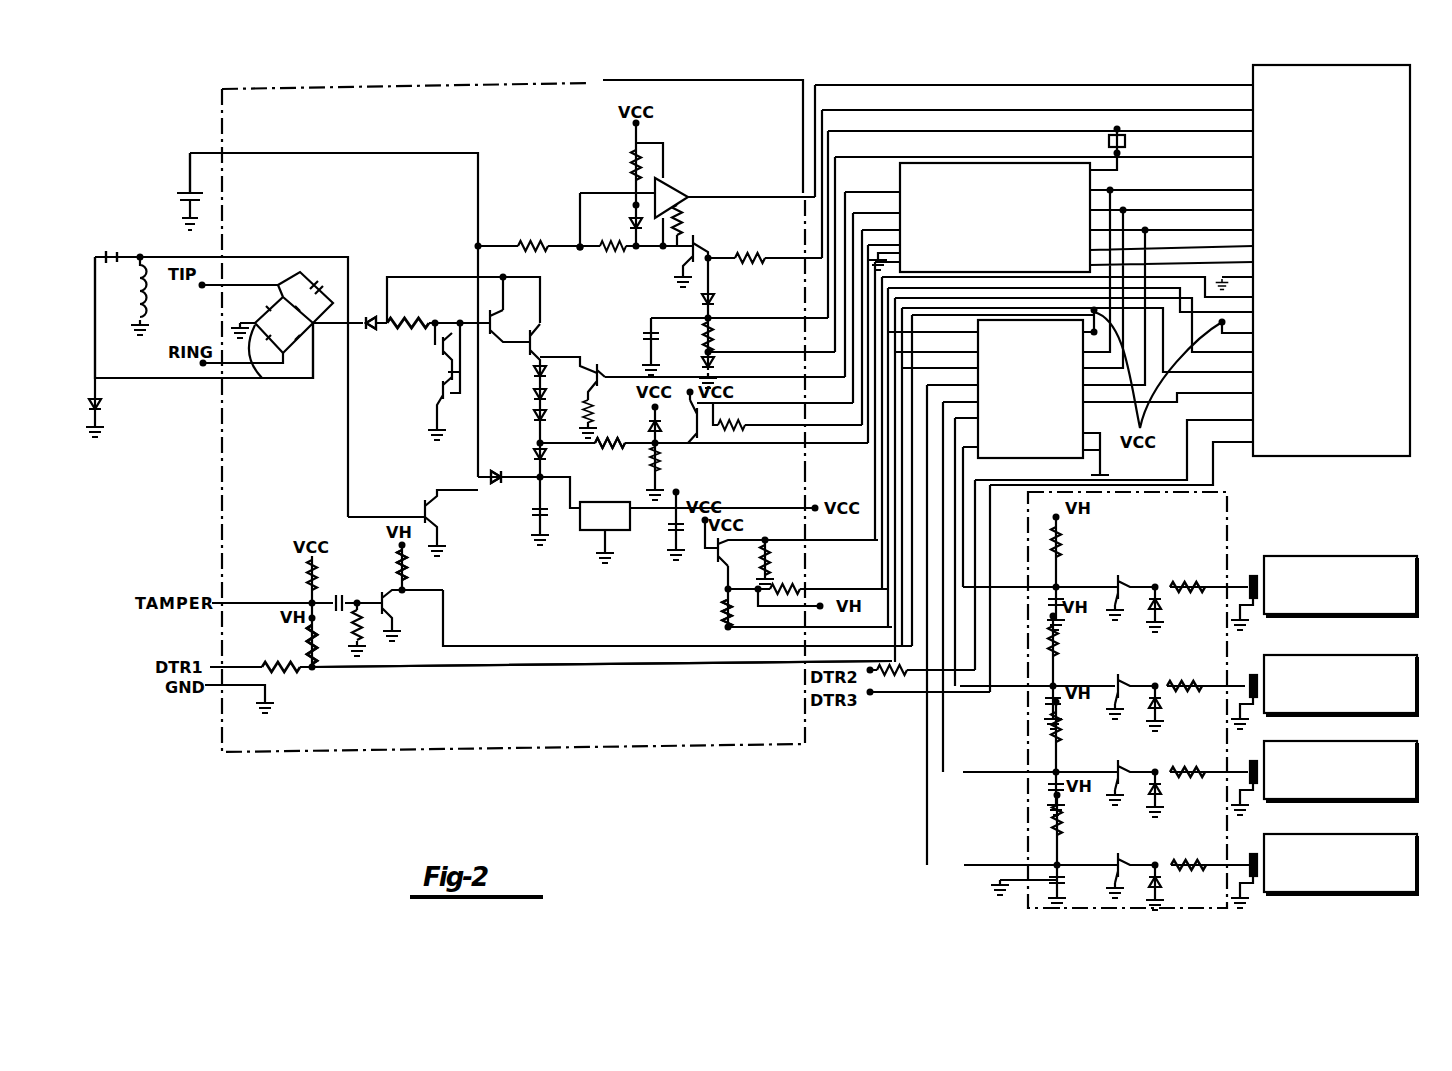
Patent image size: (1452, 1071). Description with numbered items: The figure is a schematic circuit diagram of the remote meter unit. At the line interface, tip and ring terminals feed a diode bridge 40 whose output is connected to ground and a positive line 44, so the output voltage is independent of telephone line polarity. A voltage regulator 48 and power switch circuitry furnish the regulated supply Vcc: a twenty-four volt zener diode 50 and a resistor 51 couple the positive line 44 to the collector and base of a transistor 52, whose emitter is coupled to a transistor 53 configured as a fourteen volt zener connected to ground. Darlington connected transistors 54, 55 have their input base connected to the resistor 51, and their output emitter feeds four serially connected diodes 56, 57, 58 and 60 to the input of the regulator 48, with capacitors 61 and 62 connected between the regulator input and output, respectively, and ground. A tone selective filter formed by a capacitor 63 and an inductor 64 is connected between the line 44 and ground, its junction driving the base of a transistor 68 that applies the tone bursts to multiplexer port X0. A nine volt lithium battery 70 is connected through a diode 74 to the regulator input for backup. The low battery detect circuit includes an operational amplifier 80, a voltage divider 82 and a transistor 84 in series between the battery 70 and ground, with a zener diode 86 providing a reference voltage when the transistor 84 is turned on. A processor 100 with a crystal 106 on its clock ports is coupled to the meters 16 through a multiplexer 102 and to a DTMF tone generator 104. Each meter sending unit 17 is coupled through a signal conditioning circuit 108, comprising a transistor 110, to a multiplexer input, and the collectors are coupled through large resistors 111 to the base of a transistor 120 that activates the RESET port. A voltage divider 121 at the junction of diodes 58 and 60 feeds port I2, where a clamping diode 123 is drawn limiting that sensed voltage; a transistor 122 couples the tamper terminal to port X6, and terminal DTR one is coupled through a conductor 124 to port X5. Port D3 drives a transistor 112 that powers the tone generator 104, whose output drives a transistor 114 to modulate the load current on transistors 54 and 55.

The meter 16 is at (1396, 553).
The meter sending unit 17 is at (1253, 562).
The diode bridge 40 is at (281, 341).
The positive line 44 is at (345, 380).
The voltage regulator 48 is at (590, 533).
The zener diode 50 is at (372, 310).
The resistor 51 is at (435, 342).
The transistor 52 is at (440, 380).
The transistor 53 is at (433, 410).
The Darlington connected transistor 54 is at (500, 323).
The Darlington connected transistor 55 is at (582, 320).
The diode 56 is at (534, 372).
The diode 57 is at (534, 397).
The diode 58 is at (534, 418).
The diode 60 is at (550, 450).
The capacitor 61 is at (533, 520).
The capacitor 62 is at (673, 535).
The capacitor 63 is at (106, 252).
The inductor 64 is at (150, 300).
The transistor 68 is at (428, 498).
The lithium battery 70 is at (180, 188).
The diode 74 is at (510, 458).
The operational amplifier 80 is at (700, 165).
The voltage divider 82 is at (582, 252).
The transistor 84 is at (705, 247).
The zener diode 86 is at (630, 228).
The processor 100 is at (1426, 456).
The multiplexer 102 is at (1035, 460).
The DTMF tone generator 104 is at (897, 255).
The crystal 106 is at (1107, 140).
The signal conditioning circuit 108 is at (1162, 602).
The transistor 110 is at (1130, 581).
The resistor 111 is at (405, 580).
The transistor 112 is at (692, 438).
The transistor 114 is at (604, 367).
The transistor 120 is at (718, 552).
The voltage divider 121 is at (642, 445).
The transistor 122 is at (382, 592).
The diode 123 is at (650, 424).
The conductor 124 is at (591, 672).